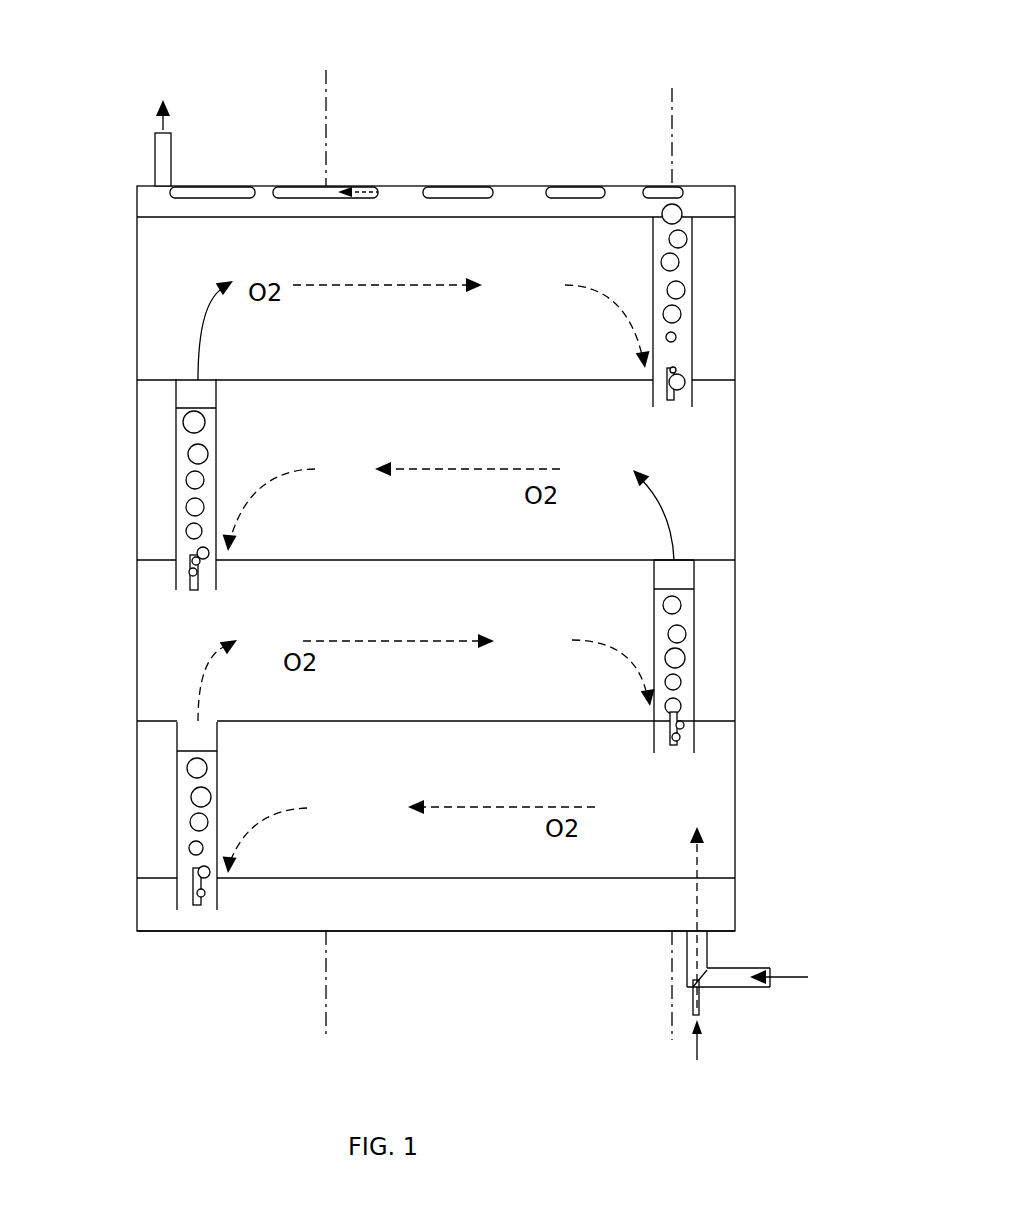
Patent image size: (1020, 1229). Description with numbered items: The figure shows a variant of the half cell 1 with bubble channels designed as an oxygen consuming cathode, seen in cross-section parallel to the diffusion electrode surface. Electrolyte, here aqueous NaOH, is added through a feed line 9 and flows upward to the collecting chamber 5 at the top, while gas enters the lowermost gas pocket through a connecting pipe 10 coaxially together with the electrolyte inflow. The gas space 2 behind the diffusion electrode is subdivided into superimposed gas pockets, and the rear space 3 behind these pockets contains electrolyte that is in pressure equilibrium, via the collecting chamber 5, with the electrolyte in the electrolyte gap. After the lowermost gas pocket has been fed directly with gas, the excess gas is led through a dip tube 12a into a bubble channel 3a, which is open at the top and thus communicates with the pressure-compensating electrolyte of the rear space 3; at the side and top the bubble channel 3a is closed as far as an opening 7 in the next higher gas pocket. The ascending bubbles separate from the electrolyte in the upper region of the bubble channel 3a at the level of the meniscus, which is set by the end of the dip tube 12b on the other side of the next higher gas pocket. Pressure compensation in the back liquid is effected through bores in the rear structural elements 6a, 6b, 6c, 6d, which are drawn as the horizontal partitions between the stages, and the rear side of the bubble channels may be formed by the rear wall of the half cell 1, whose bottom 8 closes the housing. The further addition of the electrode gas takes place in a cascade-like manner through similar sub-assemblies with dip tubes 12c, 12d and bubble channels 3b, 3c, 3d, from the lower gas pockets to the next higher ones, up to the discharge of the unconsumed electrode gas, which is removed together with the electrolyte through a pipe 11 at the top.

The half cell 1 is at (737, 484).
The gas space 2 is at (668, 577).
The rear space 3 is at (320, 560).
The bubble channel 3a is at (188, 845).
The bubble channel 3b is at (687, 648).
The bubble channel 3c is at (182, 523).
The bubble channel 3d is at (681, 328).
The collecting chamber 5 is at (519, 200).
The rear structural element 6a is at (722, 878).
The rear structural element 6b is at (705, 723).
The rear structural element 6c is at (705, 562).
The rear structural element 6d is at (709, 382).
The opening 7 is at (683, 559).
The bottom wall 8 is at (428, 916).
The feed line 9 is at (750, 989).
The connecting pipe 10 is at (700, 995).
The pipe 11 is at (172, 150).
The dip tube 12a is at (190, 888).
The dip tube 12b is at (680, 716).
The dip tube 12c is at (190, 565).
The dip tube 12d is at (674, 368).